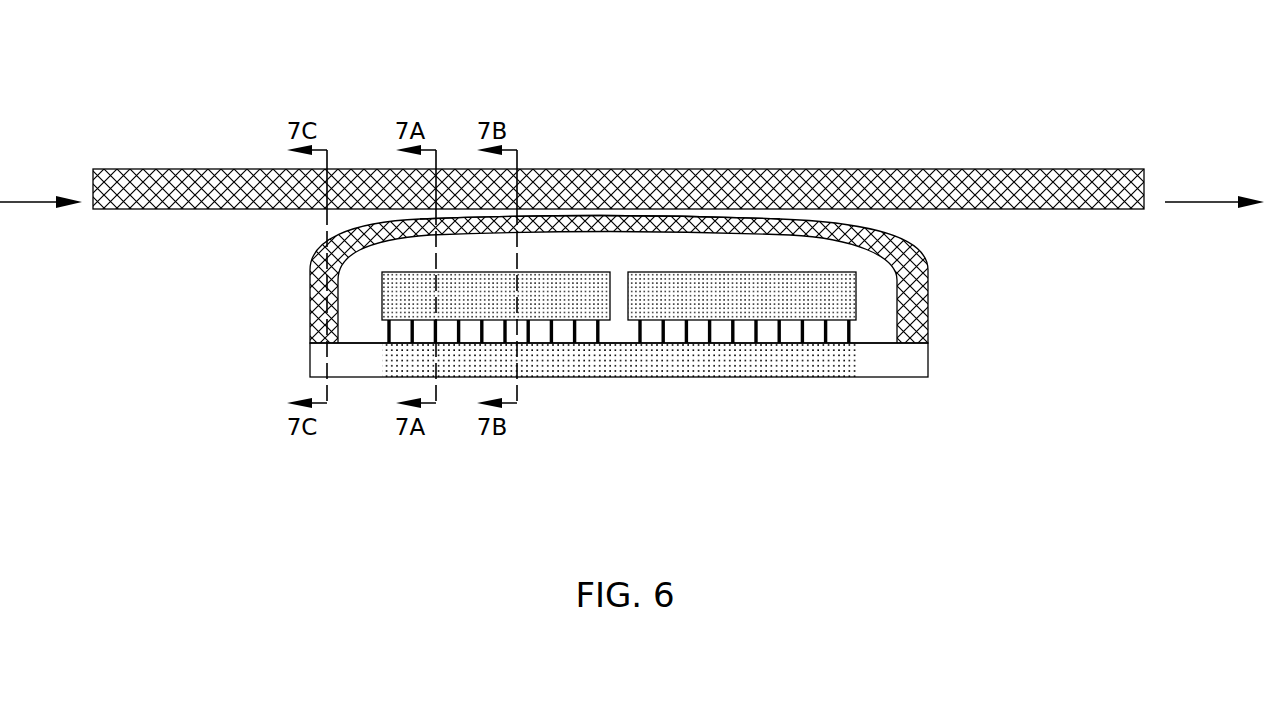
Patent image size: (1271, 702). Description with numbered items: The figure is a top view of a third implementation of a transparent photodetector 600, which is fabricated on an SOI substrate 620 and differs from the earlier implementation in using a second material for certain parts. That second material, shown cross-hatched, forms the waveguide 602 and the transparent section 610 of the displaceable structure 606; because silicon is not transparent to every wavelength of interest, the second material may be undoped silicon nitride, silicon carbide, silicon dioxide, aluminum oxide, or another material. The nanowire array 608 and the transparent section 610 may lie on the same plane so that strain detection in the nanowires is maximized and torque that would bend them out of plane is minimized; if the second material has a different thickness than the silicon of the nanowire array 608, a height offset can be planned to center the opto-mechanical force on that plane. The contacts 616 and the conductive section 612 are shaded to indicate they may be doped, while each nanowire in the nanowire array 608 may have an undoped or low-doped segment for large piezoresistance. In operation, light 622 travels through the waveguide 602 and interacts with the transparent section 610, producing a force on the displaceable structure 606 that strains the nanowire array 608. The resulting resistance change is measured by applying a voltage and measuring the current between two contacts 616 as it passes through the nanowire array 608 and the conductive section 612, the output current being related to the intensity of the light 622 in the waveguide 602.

The transparent photodetector 600 is at (188, 70).
The waveguide 602 is at (1013, 192).
The displaceable structure 606 is at (310, 302).
The nanowire array 608 is at (850, 331).
The transparent section 610 is at (737, 220).
The conductive section 612 is at (857, 442).
The contacts 616 is at (692, 283).
The SOI substrate 620 is at (143, 483).
The light 622 is at (23, 201).